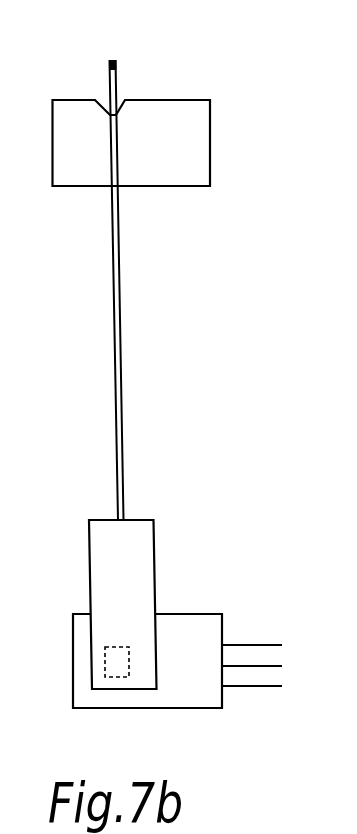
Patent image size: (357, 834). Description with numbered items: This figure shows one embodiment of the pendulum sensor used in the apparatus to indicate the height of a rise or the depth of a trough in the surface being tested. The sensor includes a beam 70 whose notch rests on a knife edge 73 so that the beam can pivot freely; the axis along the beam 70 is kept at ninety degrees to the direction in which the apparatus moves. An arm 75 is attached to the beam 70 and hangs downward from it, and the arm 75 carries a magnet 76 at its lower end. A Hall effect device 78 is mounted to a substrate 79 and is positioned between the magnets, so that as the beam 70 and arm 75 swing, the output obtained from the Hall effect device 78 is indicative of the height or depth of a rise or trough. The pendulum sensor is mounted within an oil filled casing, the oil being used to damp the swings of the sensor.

The beam 70 is at (113, 70).
The knife edge 73 is at (187, 137).
The arm 75 is at (119, 342).
The magnet 76 is at (91, 550).
The Hall effect device 78 is at (110, 678).
The substrate 79 is at (148, 699).